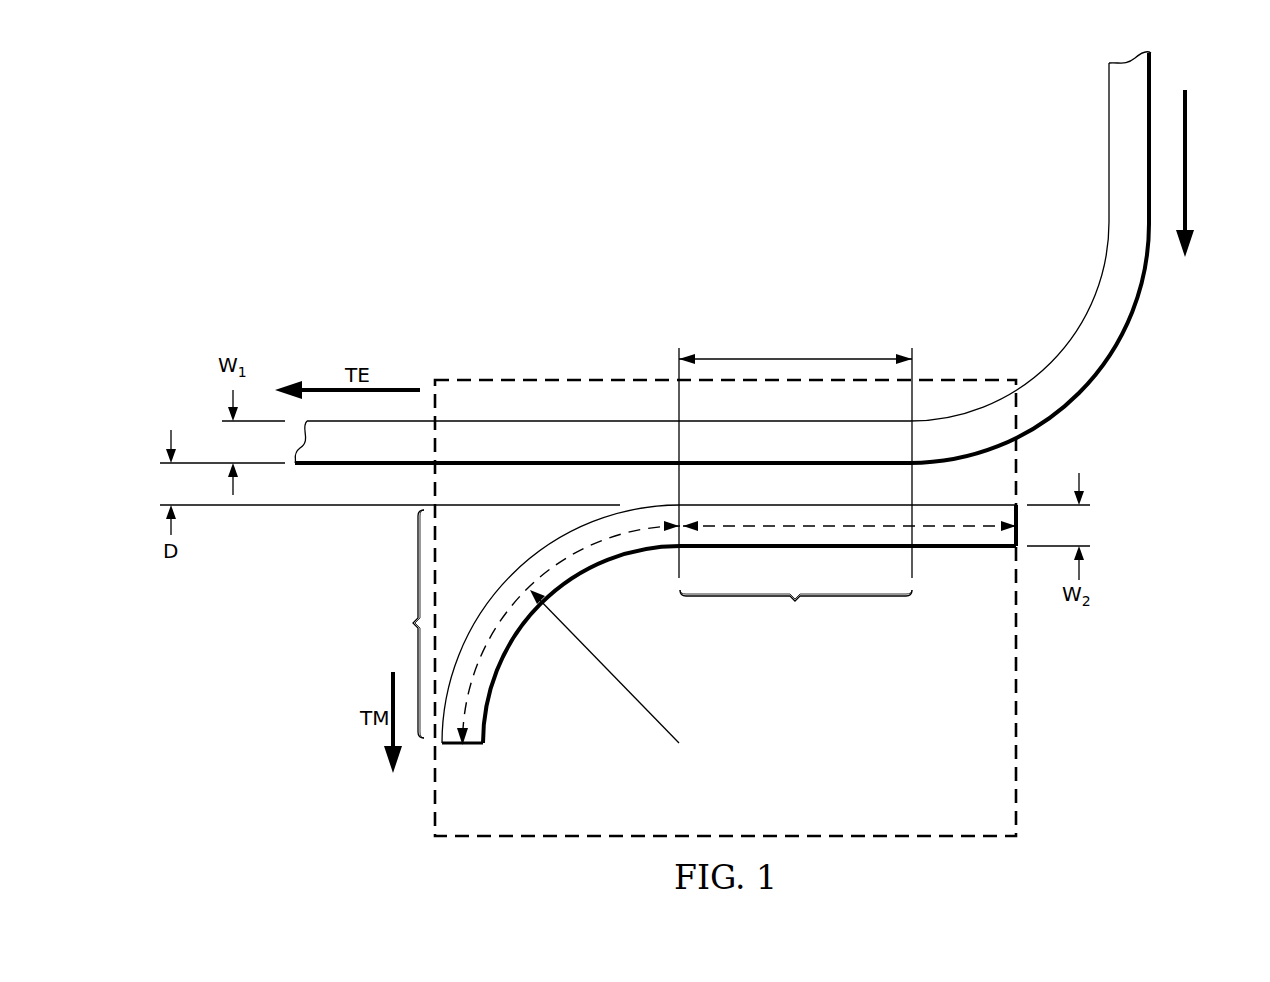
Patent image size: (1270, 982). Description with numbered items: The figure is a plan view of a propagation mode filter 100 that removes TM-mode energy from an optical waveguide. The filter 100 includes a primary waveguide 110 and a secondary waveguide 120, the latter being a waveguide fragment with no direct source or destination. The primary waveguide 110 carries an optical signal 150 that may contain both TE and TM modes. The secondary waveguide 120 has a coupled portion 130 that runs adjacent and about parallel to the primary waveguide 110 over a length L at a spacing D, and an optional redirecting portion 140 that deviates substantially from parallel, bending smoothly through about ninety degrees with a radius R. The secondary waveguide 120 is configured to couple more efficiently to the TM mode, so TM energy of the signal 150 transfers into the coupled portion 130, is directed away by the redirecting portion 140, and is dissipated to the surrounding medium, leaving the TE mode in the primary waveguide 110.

The propagation mode filter 100 is at (1022, 761).
The primary waveguide 110 is at (1109, 140).
The secondary waveguide 120 is at (956, 547).
The coupled portion 130 is at (795, 483).
The redirecting portion 140 is at (394, 624).
The optical signal 150 is at (1187, 112).